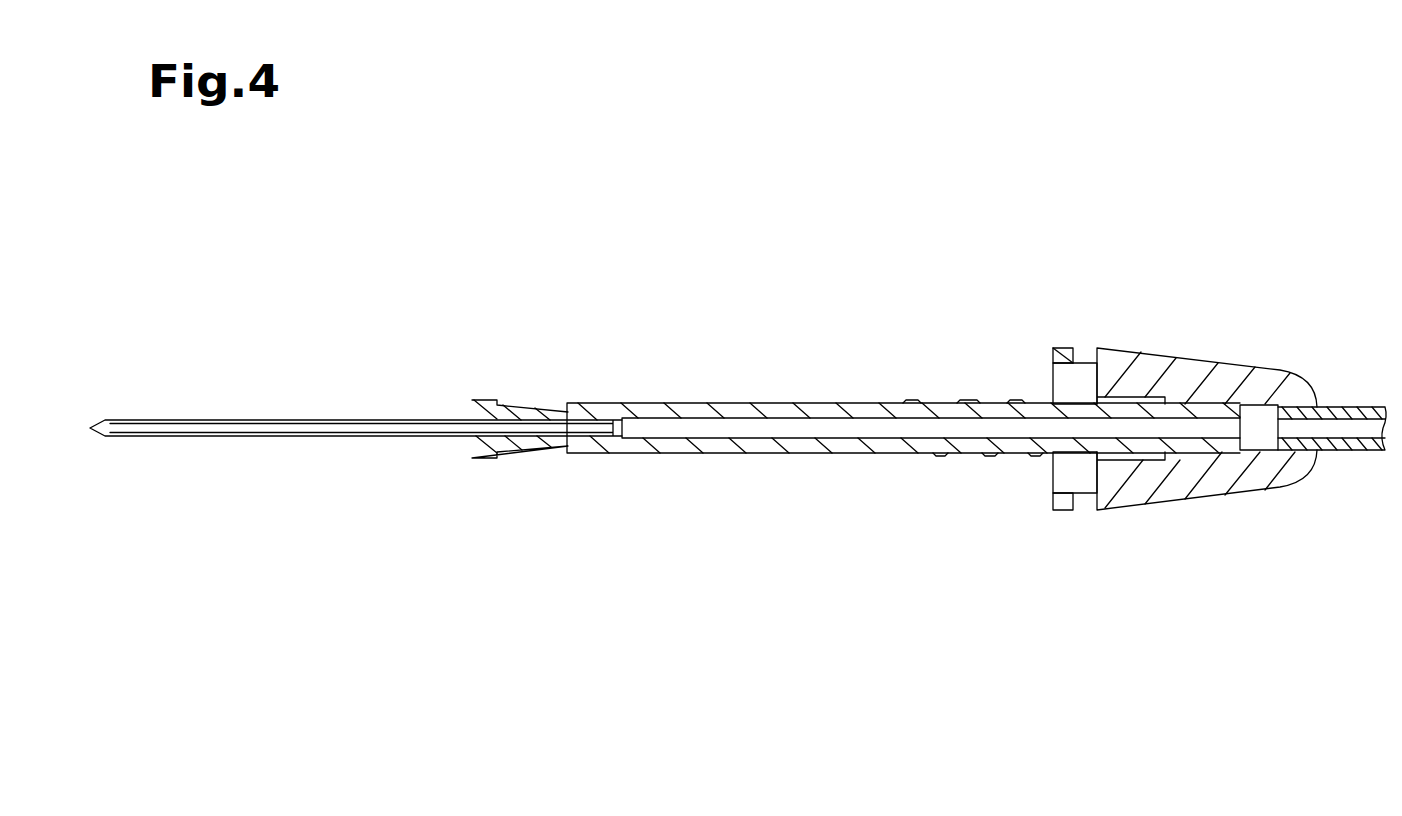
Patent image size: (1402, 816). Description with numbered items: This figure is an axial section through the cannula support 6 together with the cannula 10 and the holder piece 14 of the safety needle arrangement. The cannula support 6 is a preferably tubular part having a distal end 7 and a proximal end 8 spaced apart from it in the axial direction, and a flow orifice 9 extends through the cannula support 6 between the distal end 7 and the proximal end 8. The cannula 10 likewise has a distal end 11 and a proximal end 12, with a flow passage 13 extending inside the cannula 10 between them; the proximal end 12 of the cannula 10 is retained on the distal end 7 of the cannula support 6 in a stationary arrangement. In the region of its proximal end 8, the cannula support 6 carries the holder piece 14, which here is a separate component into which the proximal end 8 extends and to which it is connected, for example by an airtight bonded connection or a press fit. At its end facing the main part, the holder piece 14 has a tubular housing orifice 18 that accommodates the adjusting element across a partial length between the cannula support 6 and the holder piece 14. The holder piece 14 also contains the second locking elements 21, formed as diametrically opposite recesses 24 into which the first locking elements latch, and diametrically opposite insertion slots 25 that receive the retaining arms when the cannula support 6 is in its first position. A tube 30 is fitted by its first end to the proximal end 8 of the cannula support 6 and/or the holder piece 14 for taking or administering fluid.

The cannula support 6 is at (796, 328).
The distal end 7 is at (482, 392).
The proximal end 8 is at (1260, 390).
The flow orifice 9 is at (840, 427).
The cannula 10 is at (290, 458).
The distal end 11 is at (100, 465).
The proximal end 12 is at (613, 388).
The flow passage 13 is at (200, 422).
The holder piece 14 is at (1195, 490).
The housing orifice 18 is at (1140, 396).
The second locking elements 21 is at (1082, 522).
The recesses 24 is at (1083, 350).
The insertion slots 25 is at (1066, 368).
The tube 30 is at (1345, 454).